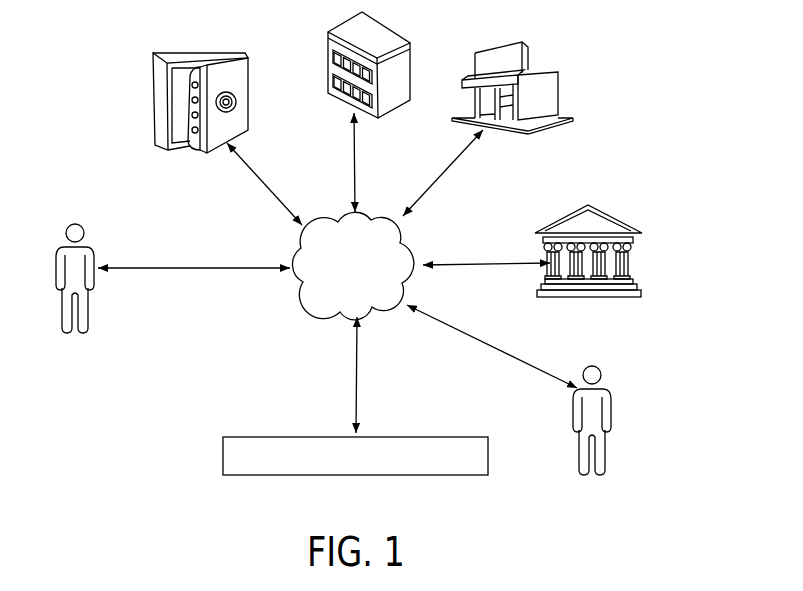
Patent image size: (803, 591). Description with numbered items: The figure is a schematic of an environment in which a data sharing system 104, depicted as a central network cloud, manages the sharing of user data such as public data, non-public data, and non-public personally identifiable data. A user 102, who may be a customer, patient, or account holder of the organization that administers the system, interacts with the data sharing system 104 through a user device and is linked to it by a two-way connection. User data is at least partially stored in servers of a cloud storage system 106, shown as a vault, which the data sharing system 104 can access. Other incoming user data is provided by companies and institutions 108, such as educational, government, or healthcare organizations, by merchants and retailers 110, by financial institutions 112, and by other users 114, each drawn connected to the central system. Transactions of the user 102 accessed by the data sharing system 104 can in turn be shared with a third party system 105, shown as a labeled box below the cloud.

The user 102 is at (93, 250).
The data sharing system 104 is at (377, 279).
The third party system 105 is at (223, 455).
The cloud storage system 106 is at (248, 72).
The companies and institutions 108 is at (410, 68).
The merchants and retailers 110 is at (560, 93).
The financial institutions 112 is at (628, 262).
The other users 114 is at (612, 392).